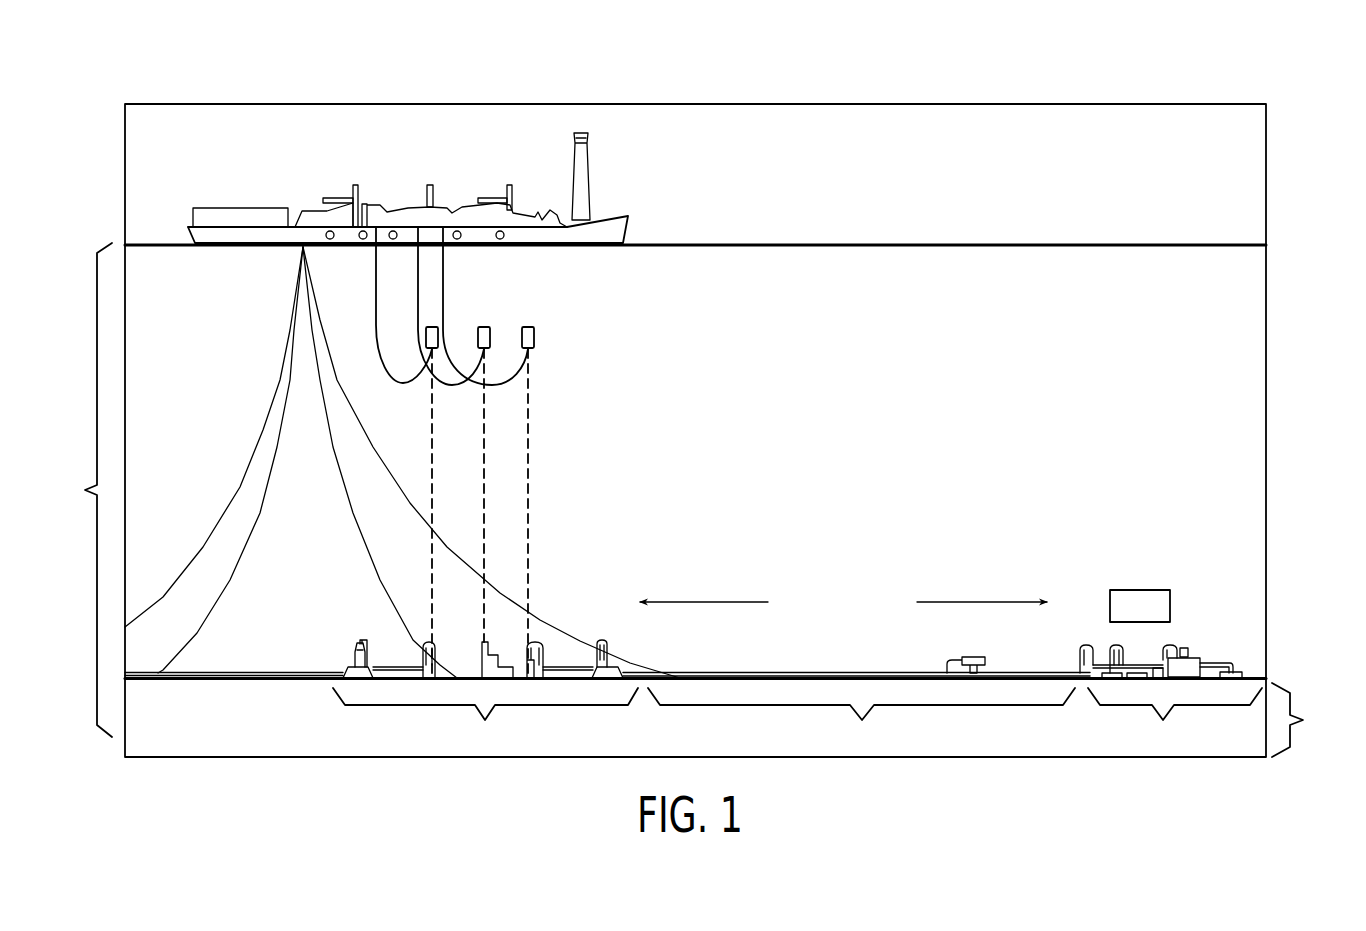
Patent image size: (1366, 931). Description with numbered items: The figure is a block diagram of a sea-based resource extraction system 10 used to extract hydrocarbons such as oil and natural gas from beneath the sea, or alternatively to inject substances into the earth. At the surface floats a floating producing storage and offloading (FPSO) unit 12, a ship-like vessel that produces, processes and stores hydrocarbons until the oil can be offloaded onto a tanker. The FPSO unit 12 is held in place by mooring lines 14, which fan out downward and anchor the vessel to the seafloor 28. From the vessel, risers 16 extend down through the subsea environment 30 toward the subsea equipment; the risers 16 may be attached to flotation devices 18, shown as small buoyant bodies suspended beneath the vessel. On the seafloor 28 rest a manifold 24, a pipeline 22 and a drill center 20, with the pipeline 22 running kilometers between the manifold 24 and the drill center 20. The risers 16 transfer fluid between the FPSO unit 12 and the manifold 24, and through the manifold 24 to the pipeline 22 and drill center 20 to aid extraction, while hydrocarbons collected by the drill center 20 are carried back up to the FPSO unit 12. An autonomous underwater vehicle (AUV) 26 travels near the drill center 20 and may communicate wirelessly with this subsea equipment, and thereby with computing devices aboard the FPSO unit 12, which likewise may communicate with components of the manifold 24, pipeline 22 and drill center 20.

The resource extraction system 10 is at (1322, 97).
The floating producing storage and offloading (FPSO) unit 12 is at (482, 155).
The mooring lines 14 is at (263, 379).
The risers 16 is at (541, 465).
The flotation devices 18 is at (547, 327).
The drill center 20 is at (1201, 642).
The pipeline 22 is at (772, 663).
The manifold 24 is at (474, 643).
The autonomous underwater vehicle (AUV) 26 is at (1140, 588).
The seafloor 28 is at (1307, 720).
The subsea environment 30 is at (77, 490).